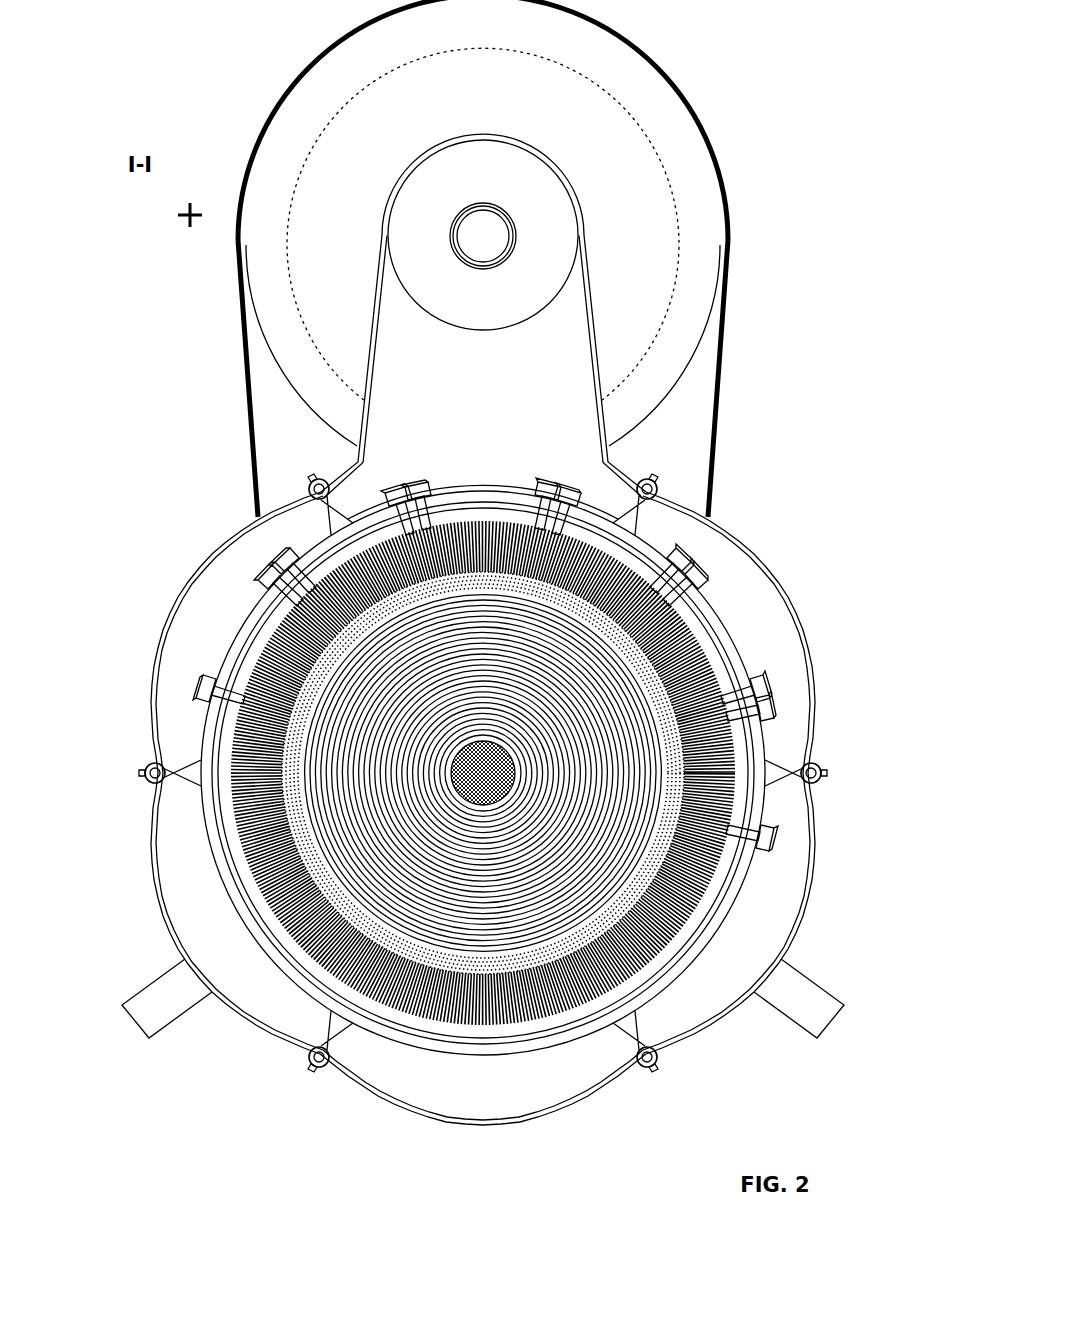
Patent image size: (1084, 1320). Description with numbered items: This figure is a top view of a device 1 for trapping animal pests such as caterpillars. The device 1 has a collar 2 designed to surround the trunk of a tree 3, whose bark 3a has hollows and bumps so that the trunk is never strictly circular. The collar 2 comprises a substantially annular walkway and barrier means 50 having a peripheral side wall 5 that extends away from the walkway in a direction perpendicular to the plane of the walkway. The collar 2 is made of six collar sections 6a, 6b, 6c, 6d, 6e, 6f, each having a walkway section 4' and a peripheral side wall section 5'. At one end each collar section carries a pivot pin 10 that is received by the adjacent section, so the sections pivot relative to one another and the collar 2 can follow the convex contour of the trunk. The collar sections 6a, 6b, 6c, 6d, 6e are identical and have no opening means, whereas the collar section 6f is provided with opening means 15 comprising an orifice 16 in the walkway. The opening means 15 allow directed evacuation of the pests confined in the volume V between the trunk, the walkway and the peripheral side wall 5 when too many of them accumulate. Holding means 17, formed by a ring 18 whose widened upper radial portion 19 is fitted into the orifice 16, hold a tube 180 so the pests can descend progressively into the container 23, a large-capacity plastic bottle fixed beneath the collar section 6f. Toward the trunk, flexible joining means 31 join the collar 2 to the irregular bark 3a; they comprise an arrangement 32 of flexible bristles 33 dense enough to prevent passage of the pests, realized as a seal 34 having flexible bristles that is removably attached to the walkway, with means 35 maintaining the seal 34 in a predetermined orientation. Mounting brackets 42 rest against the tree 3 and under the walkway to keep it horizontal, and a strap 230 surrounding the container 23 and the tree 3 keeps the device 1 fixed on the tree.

The device 1 is at (810, 460).
The collar 2 is at (724, 503).
The tree 3 is at (265, 885).
The bark 3a is at (374, 990).
The walkway section 4' is at (484, 764).
The peripheral side wall 5 is at (440, 808).
The peripheral side wall section 5' is at (482, 742).
The collar section 6a is at (208, 548).
The collar section 6b is at (150, 882).
The collar section 6c is at (458, 1130).
The collar section 6d is at (799, 943).
The collar section 6e is at (818, 654).
The collar section 6f is at (599, 288).
The pivot pin 10 is at (311, 482).
The opening means 15 is at (412, 216).
The orifice 16 is at (548, 302).
The holding means 17 is at (446, 308).
The ring 18 is at (514, 312).
The widened upper radial portion 19 is at (485, 330).
The container 23 is at (686, 140).
The flexible joining means 31 is at (760, 822).
The arrangement of flexible bristles 32 is at (770, 800).
The flexible bristles 33 is at (700, 880).
The seal having flexible bristles 34 is at (718, 872).
The means for maintaining the seal 35 is at (565, 1052).
The mounting brackets 42 is at (810, 1018).
The barrier means 50 is at (152, 639).
The tube 180 is at (493, 222).
The strap 230 is at (250, 357).
The volume V is at (770, 614).